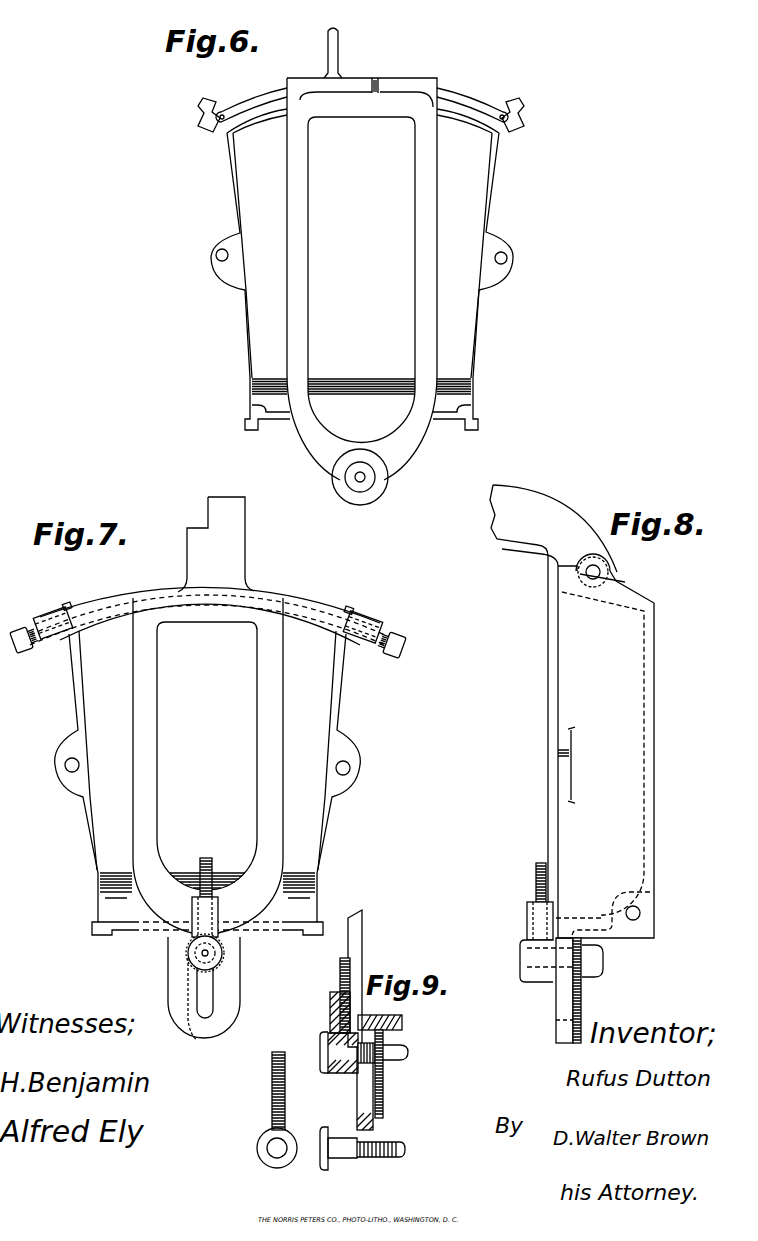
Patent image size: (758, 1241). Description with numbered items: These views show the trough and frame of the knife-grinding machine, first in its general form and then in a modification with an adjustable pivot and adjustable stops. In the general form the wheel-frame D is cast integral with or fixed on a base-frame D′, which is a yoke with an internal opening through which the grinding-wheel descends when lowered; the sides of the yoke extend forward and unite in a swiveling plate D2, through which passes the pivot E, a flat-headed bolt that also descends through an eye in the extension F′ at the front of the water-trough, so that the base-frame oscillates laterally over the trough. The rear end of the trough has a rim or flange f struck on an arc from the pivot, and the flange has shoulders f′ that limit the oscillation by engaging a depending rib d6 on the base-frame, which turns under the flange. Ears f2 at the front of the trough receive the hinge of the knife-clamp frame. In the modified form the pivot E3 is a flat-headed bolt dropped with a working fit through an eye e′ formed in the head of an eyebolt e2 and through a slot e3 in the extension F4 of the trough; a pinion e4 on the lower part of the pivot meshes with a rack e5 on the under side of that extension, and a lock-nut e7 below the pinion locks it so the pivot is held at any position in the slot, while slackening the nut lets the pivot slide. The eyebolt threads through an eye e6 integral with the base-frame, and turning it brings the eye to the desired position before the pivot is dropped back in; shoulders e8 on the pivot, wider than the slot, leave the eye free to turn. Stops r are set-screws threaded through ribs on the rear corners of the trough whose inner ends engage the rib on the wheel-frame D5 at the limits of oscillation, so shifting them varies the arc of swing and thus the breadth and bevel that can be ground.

In FIG. 7, the wheel-frame D is at (216, 544).
In FIG. 8, the wheel-frame D is at (553, 528).
In FIG. 6, the base-frame D′ is at (288, 262).
In FIG. 6, the swiveling plate D2 is at (377, 472).
In FIG. 7, the wheel-frame D5 is at (258, 738).
In FIG. 8, the wheel-frame D5 is at (548, 680).
In FIG. 8, the depending rib d6 is at (598, 520).
In FIG. 6, the pivot E is at (362, 480).
In FIG. 7, the adjustable pivot E3 is at (187, 970).
In FIG. 8, the adjustable pivot E3 is at (520, 960).
In FIG. 9, the adjustable pivot E3 is at (328, 1052).
In FIG. 6, the extension of the trough F′ is at (488, 308).
In FIG. 7, the extension of the trough F′ is at (207, 761).
In FIG. 8, the extension of the trough F′ is at (562, 992).
In FIG. 9, the extension of the trough F′ is at (402, 1020).
In FIG. 7, the extension of the water-trough F4 is at (230, 967).
In FIG. 9, the extension of the water-trough F4 is at (376, 1127).
In FIG. 6, the rim or flange f is at (275, 82).
In FIG. 6, the shoulders f′ is at (358, 112).
In FIG. 8, the ears f2 is at (618, 893).
In FIG. 7, the stop set-screws r is at (78, 608).
In FIG. 8, the stop set-screws r is at (608, 579).
In FIG. 9, the eye e′ is at (257, 1148).
In FIG. 7, the eyebolt e2 is at (212, 866).
In FIG. 8, the eyebolt e2 is at (536, 872).
In FIG. 9, the eyebolt e2 is at (340, 968).
In FIG. 7, the slot e3 is at (207, 1010).
In FIG. 9, the slot e3 is at (365, 1093).
In FIG. 7, the pinion e4 is at (188, 958).
In FIG. 8, the pinion e4 is at (581, 972).
In FIG. 9, the pinion e4 is at (383, 1073).
In FIG. 7, the rack e5 is at (197, 1040).
In FIG. 8, the rack e5 is at (581, 1003).
In FIG. 9, the rack e5 is at (383, 1100).
In FIG. 7, the eye e6 is at (192, 910).
In FIG. 8, the eye e6 is at (527, 920).
In FIG. 9, the eye e6 is at (330, 1010).
In FIG. 8, the lock-nut e7 is at (603, 950).
In FIG. 9, the lock-nut e7 is at (395, 1043).
In FIG. 9, the shoulders e8 is at (372, 1160).